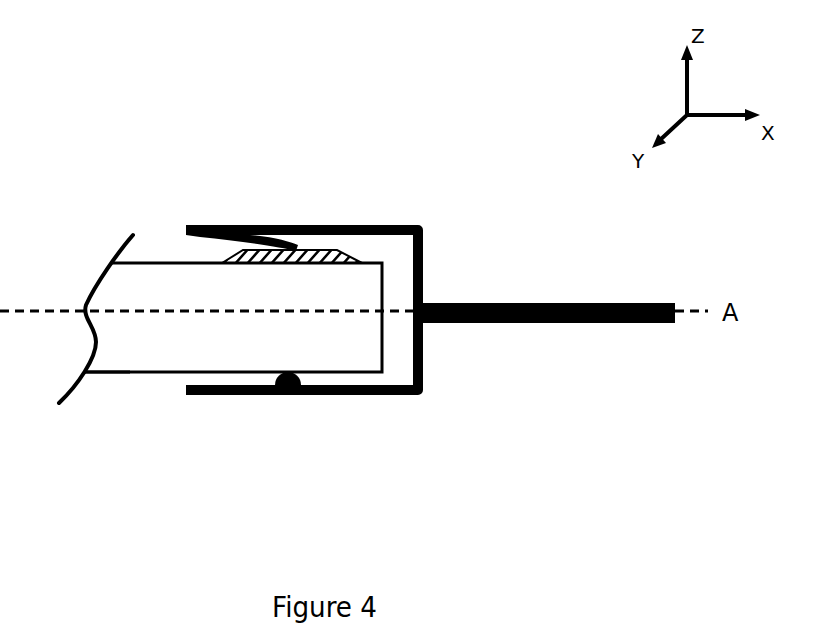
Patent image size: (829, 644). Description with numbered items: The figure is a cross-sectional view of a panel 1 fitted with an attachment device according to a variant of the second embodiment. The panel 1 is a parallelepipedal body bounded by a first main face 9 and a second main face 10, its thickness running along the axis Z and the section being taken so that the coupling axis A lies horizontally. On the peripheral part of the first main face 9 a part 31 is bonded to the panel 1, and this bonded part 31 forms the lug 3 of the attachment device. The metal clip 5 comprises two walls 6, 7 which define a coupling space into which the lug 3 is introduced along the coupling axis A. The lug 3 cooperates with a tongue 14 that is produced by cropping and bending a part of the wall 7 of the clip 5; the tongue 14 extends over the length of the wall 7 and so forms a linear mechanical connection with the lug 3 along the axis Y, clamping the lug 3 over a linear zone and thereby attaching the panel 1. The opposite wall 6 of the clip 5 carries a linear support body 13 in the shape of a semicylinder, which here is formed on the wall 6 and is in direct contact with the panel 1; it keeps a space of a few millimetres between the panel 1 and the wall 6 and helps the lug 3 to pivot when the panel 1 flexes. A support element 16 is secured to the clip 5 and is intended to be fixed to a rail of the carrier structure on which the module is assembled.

The panel 1 is at (158, 260).
The lug 3 is at (333, 258).
The metal clip 5 is at (423, 372).
The wall 6 is at (195, 384).
The wall 7 is at (197, 236).
The first main face 9 is at (118, 262).
The second main face 10 is at (105, 376).
The support body 13 is at (298, 378).
The tongue 14 is at (302, 226).
The support element 16 is at (502, 302).
The part 31 is at (343, 258).